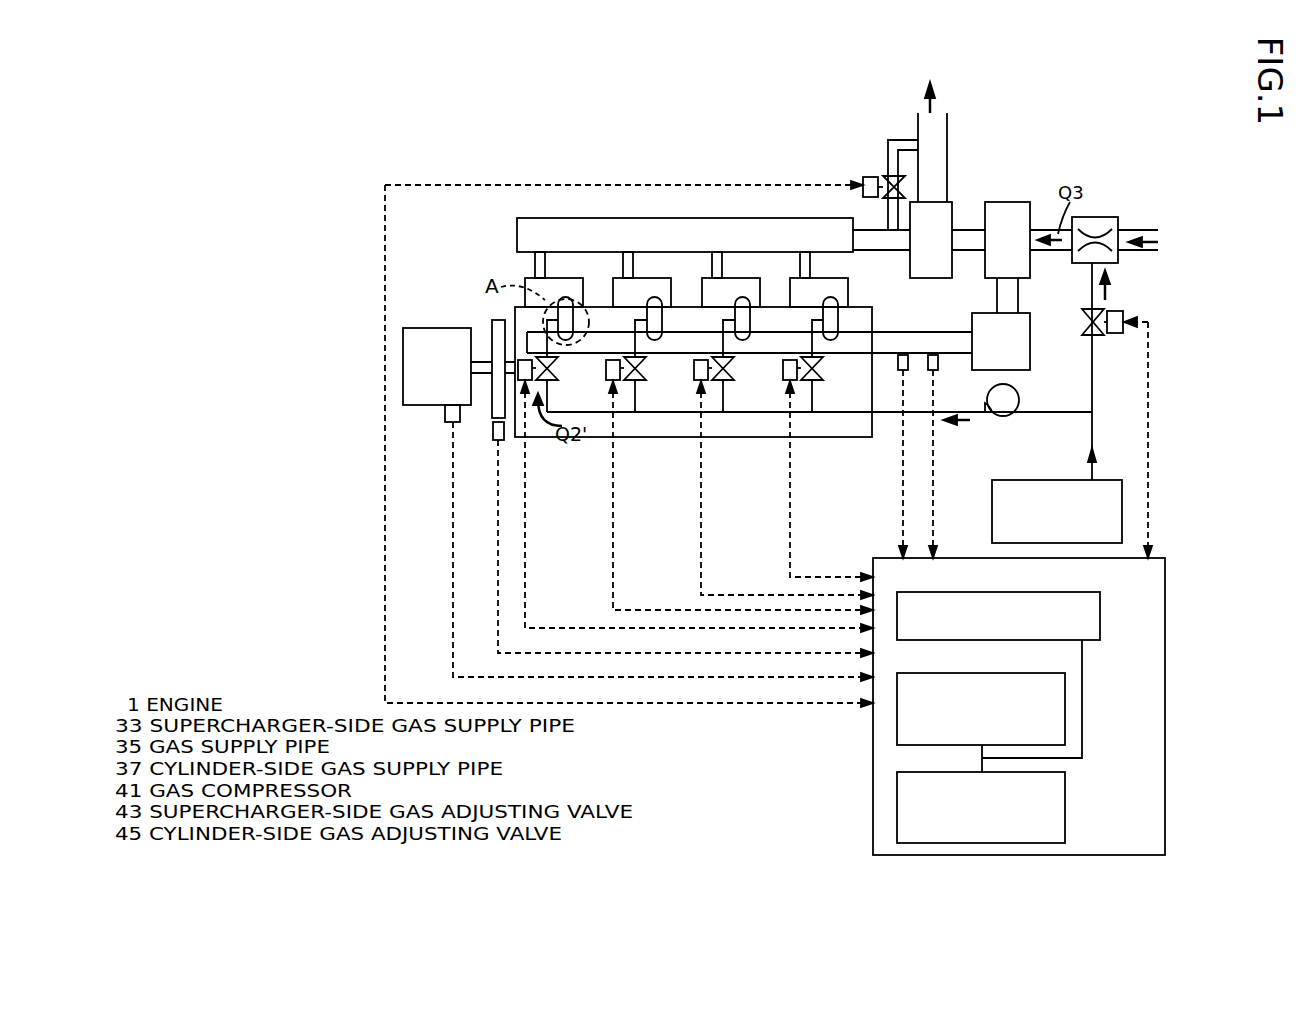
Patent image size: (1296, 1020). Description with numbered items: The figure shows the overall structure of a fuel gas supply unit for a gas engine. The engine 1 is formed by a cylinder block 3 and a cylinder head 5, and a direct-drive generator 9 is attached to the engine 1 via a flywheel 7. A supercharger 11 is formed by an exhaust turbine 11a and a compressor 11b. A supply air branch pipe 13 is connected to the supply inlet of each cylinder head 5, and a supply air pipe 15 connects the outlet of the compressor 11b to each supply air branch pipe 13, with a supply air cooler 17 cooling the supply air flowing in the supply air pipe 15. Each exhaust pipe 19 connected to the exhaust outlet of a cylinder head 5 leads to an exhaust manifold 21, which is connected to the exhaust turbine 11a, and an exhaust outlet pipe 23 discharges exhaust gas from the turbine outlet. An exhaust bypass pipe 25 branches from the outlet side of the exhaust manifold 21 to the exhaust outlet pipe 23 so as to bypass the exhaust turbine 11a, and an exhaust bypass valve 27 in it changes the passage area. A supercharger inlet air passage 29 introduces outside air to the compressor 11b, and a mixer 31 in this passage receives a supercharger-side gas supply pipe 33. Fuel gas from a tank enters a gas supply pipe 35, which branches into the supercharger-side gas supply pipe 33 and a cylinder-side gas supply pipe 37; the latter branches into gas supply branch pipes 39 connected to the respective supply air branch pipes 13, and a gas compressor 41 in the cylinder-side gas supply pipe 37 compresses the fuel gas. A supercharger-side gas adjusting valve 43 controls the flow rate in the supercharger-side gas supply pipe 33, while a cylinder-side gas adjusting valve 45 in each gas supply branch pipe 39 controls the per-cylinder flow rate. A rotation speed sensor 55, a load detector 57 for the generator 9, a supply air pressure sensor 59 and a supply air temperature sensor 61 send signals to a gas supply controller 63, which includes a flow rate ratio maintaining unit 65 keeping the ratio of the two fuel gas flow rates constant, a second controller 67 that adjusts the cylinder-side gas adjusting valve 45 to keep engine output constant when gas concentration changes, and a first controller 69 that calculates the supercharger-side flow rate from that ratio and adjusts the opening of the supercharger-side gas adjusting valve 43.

The engine 1 is at (693, 416).
The cylinder block 3 is at (668, 440).
The cylinder head 5 is at (666, 275).
The flywheel 7 is at (492, 322).
The generator 9 is at (427, 328).
The supercharger 11 is at (982, 202).
The exhaust turbine 11a is at (950, 202).
The compressor 11b is at (1008, 202).
The supply air branch pipe 13 is at (649, 300).
The supply air pipe 15 is at (908, 332).
The supply air cooler 17 is at (1030, 348).
The exhaust pipe 19 is at (530, 258).
The exhaust manifold 21 is at (668, 227).
The exhaust outlet pipe 23 is at (948, 136).
The exhaust bypass pipe 25 is at (905, 140).
The exhaust bypass valve 27 is at (883, 178).
The supercharger inlet air passage 29 is at (1131, 228).
The mixer 31 is at (1097, 217).
The supercharger-side gas supply pipe 33 is at (1095, 386).
The gas supply pipe 35 is at (1095, 434).
The cylinder-side gas supply pipe 37 is at (1047, 417).
The gas supply branch pipe 39 is at (549, 394).
The gas compressor 41 is at (1018, 398).
The supercharger-side gas adjusting valve 43 is at (1128, 316).
The cylinder-side gas adjusting valve 45 is at (560, 373).
The rotation speed sensor 55 is at (493, 432).
The load detector 57 is at (449, 423).
The supply air pressure sensor 59 is at (900, 372).
The supply air temperature sensor 61 is at (935, 372).
The gas supply controller 63 is at (1049, 706).
The flow rate ratio maintaining unit 65 is at (1100, 606).
The second controller 67 is at (965, 673).
The first controller 69 is at (965, 772).